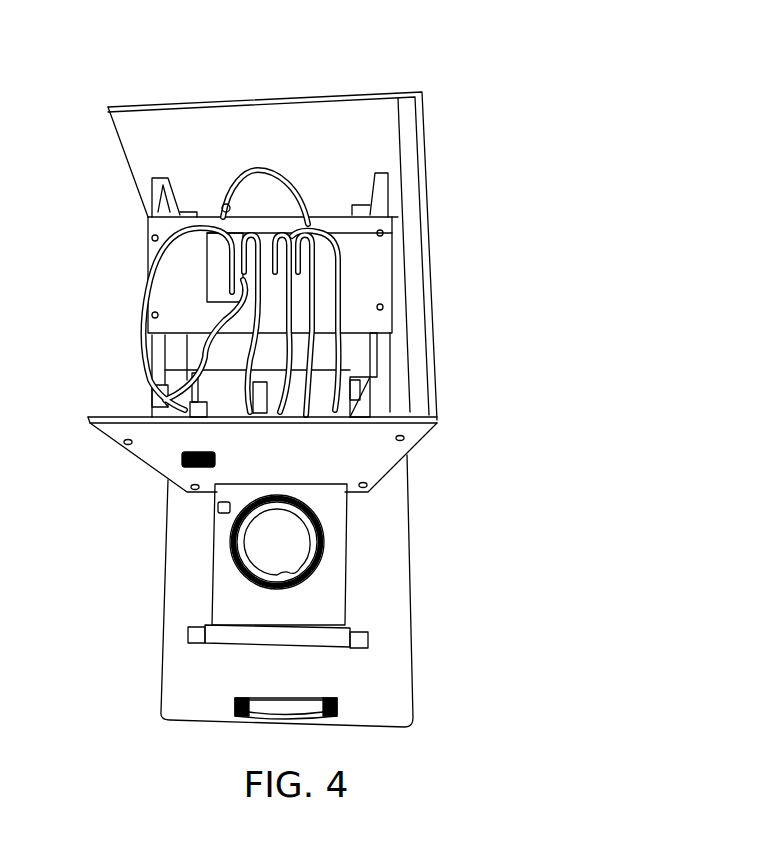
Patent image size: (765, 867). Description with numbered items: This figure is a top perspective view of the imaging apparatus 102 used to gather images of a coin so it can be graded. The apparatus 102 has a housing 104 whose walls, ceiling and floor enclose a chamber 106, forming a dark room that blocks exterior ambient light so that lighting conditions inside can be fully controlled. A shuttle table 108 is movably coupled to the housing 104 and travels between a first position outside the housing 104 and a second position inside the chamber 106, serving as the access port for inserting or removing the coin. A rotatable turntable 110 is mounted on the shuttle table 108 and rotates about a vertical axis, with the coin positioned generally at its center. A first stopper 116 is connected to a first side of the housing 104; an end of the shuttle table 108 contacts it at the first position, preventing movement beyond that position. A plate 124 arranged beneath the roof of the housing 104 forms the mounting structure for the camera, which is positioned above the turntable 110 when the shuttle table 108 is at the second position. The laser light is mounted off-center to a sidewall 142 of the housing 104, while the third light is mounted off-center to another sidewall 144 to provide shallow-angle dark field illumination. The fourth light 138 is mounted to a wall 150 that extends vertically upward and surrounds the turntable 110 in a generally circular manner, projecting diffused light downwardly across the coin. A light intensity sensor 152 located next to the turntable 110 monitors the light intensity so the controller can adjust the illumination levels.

The imaging apparatus 102 is at (308, 376).
The housing 104 is at (438, 378).
The chamber 106 is at (214, 178).
The shuttle table 108 is at (330, 603).
The turntable 110 is at (257, 538).
The first stopper 116 is at (187, 633).
The plate 124 is at (353, 355).
The fourth light 138 is at (323, 535).
The sidewall 142 is at (152, 453).
The sidewall 144 is at (258, 98).
The wall 150 is at (320, 558).
The light intensity sensor 152 is at (213, 505).